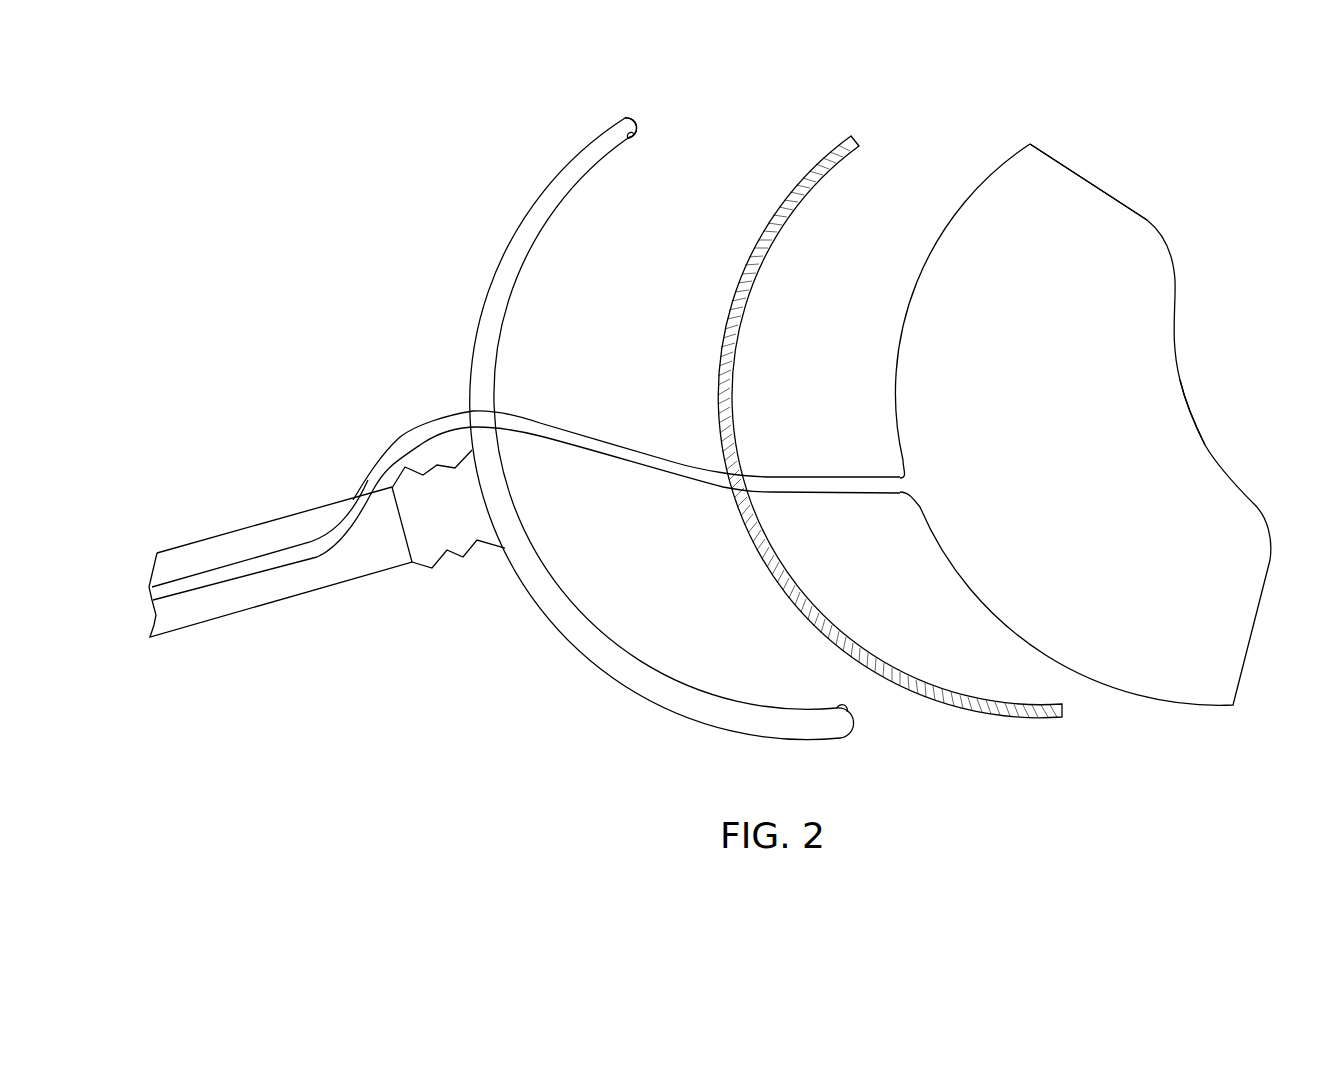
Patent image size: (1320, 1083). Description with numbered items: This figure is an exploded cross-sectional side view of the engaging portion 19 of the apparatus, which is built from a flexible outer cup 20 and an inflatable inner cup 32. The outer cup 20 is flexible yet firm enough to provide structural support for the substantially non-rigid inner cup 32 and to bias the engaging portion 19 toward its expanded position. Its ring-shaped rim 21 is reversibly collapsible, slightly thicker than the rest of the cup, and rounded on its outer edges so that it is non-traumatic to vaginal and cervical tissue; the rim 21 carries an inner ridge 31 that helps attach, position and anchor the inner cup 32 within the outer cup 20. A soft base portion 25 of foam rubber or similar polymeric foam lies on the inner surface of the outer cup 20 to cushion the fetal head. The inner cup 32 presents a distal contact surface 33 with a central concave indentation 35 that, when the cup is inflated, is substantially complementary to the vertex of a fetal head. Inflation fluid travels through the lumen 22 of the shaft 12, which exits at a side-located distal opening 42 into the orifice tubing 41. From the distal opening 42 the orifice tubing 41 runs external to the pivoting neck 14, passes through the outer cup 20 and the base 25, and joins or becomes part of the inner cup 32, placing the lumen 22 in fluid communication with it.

The shaft 12 is at (307, 597).
The pivoting neck 14 is at (430, 572).
The engaging portion 19 is at (933, 151).
The flexible outer cup 20 is at (472, 335).
The rim 21 is at (625, 117).
The lumen 22 is at (207, 588).
The soft base portion 25 is at (967, 708).
The inner ridge 31 is at (630, 141).
The inflatable inner cup 32 is at (1093, 456).
The distal surface 33 is at (1106, 192).
The central concave indentation 35 is at (1192, 406).
The orifice tubing 41 is at (418, 428).
The distal opening 42 is at (353, 496).